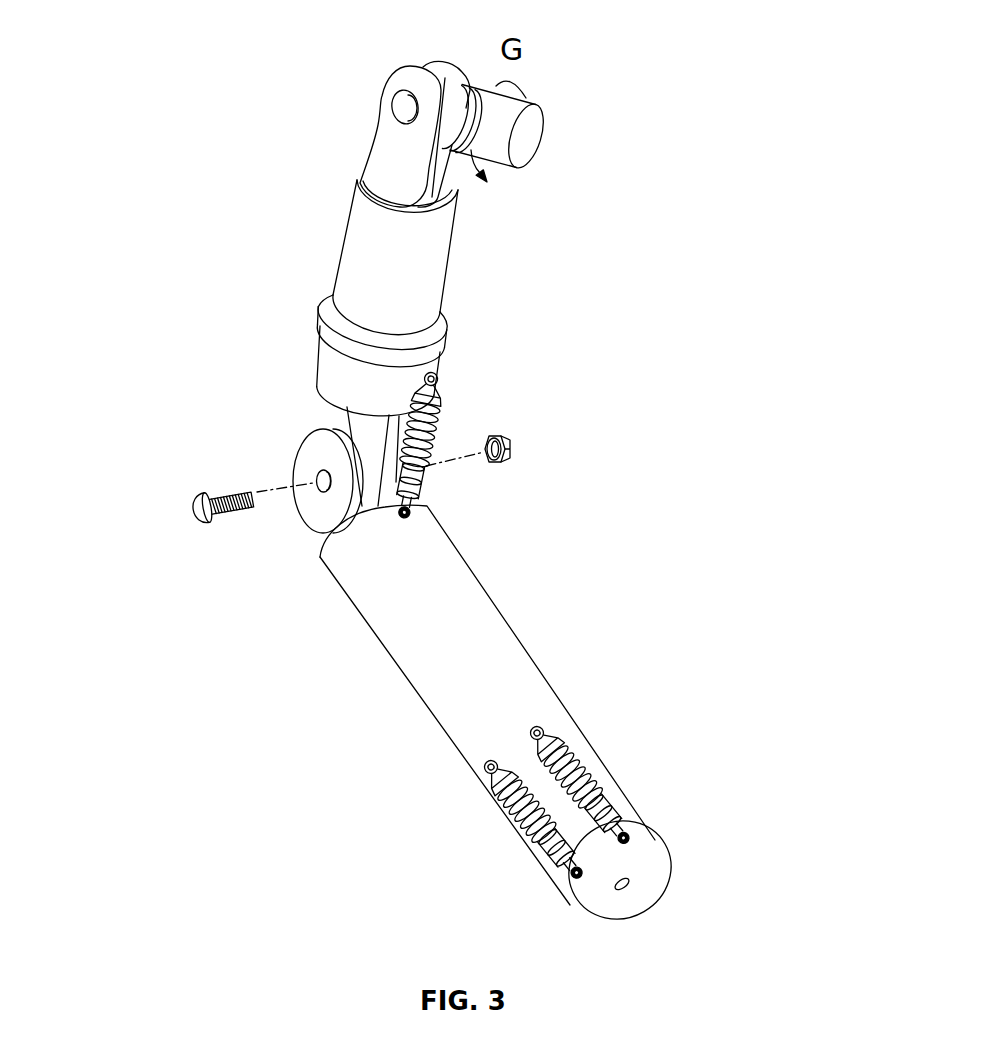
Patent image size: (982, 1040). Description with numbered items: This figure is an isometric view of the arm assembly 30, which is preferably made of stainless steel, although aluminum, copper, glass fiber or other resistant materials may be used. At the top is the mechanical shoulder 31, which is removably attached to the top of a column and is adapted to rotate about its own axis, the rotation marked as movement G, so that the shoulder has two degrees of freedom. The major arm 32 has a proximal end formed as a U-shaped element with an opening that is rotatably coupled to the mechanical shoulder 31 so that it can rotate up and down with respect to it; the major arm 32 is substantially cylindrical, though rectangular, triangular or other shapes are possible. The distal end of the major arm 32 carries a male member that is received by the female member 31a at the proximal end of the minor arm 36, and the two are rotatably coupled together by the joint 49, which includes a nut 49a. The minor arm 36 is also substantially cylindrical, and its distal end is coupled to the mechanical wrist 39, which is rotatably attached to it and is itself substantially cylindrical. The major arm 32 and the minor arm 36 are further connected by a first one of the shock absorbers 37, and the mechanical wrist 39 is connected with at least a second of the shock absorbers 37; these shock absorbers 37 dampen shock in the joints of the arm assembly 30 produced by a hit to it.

The arm assembly 30 is at (342, 242).
The mechanical shoulder 31 is at (508, 106).
The female member 31a is at (306, 523).
The major arm 32 is at (440, 308).
The minor arm 36 is at (494, 616).
The shock absorbers 37 is at (442, 390).
The mechanical wrist 39 is at (641, 816).
The joint 49 is at (192, 493).
The nut 49a is at (501, 463).